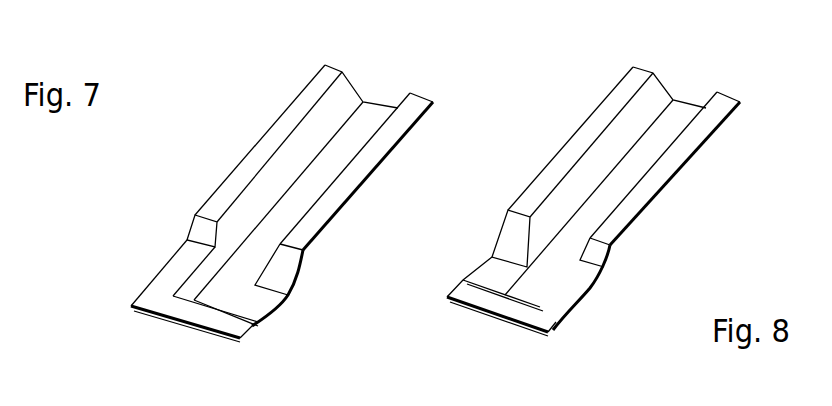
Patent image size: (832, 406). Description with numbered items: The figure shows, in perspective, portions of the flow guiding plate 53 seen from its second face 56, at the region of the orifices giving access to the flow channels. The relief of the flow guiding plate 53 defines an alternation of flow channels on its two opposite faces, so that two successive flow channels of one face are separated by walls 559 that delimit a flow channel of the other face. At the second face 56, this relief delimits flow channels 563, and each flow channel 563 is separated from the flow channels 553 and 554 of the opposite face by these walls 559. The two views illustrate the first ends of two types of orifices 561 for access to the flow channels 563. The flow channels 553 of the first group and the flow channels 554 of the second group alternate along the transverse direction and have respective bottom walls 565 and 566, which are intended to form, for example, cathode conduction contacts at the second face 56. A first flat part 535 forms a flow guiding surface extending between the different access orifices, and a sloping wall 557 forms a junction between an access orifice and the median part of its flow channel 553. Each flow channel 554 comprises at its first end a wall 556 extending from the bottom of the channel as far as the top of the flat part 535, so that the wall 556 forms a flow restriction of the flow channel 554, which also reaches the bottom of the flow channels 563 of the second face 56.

In FIG. 7, the flow guiding plate 53 is at (86, 291).
In FIG. 8, the flow guiding plate 53 is at (742, 217).
In FIG. 7, the second face 56 is at (340, 68).
In FIG. 8, the second face 56 is at (648, 68).
In FIG. 7, the first flat part 535 is at (242, 338).
In FIG. 8, the first flat part 535 is at (552, 330).
In FIG. 8, the flow channel of the first group 553 is at (670, 193).
In FIG. 7, the flow channel of the second group 554 is at (330, 230).
In FIG. 7, the wall 556 is at (297, 278).
In FIG. 8, the wall 556 is at (492, 236).
In FIG. 8, the sloping wall 557 is at (607, 258).
In FIG. 7, the wall 559 is at (275, 175).
In FIG. 8, the wall 559 is at (587, 175).
In FIG. 7, the access orifice 561 is at (200, 317).
In FIG. 8, the access orifice 561 is at (517, 307).
In FIG. 7, the flow channel of the second face 563 is at (367, 123).
In FIG. 8, the flow channel of the second face 563 is at (676, 123).
In FIG. 7, the bottom wall 565 is at (285, 118).
In FIG. 8, the bottom wall 566 is at (597, 115).